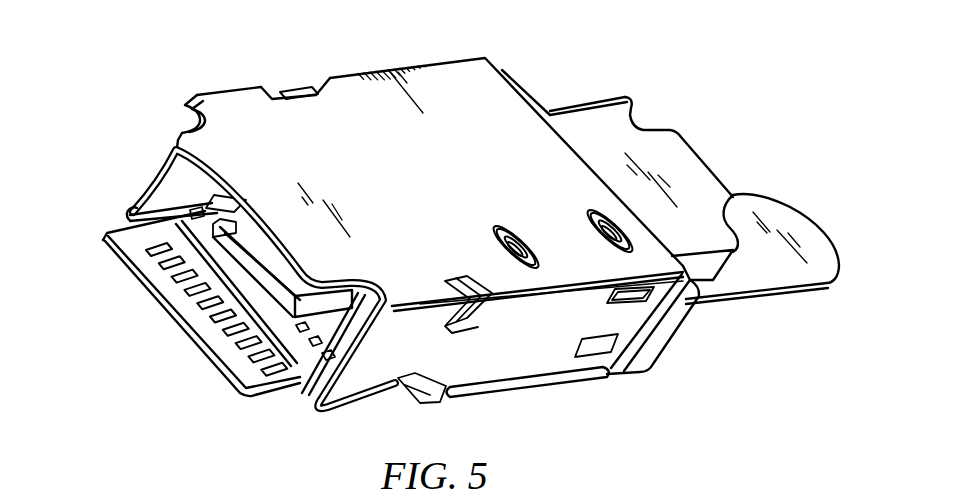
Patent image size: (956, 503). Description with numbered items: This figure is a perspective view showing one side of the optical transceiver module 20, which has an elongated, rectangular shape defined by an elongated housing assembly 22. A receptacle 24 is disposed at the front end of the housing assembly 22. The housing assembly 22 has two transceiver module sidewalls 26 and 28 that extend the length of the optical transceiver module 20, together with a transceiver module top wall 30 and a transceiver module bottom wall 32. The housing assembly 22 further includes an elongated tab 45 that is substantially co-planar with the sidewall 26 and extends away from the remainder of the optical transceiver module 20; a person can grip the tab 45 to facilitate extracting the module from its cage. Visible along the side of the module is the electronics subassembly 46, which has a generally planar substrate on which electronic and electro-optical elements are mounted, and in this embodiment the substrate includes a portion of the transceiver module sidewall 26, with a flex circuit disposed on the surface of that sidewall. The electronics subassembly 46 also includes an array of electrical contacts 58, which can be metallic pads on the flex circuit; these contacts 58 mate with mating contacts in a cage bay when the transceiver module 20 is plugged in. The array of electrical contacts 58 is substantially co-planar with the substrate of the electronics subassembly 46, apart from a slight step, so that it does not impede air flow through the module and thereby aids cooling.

The optical transceiver module 20 is at (122, 108).
The housing assembly 22 is at (298, 96).
The receptacle 24 is at (602, 100).
The transceiver module sidewall 26 is at (486, 397).
The transceiver module sidewall 28 is at (397, 70).
The transceiver module top wall 30 is at (533, 355).
The transceiver module bottom wall 32 is at (158, 172).
The elongated tab 45 is at (777, 298).
The electronics subassembly (ESA) 46 is at (177, 335).
The array of electrical contacts 58 is at (128, 242).